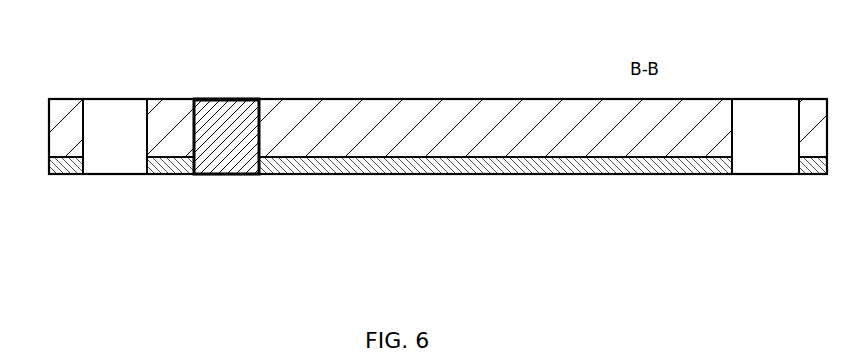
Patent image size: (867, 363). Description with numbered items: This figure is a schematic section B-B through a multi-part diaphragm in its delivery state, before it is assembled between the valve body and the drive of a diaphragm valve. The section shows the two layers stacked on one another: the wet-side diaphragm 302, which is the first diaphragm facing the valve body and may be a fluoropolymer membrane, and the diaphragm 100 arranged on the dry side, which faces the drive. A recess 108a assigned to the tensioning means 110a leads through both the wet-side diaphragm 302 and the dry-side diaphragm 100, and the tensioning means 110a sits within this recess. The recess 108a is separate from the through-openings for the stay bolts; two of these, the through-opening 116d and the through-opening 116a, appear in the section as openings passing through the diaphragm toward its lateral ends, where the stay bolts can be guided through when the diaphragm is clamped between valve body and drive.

The diaphragm 100 is at (398, 122).
The recess 108a is at (204, 70).
The tensioning means 110a is at (222, 123).
The through-opening 116a is at (792, 143).
The through-opening 116d is at (140, 142).
The wet-side diaphragm 302 is at (430, 163).